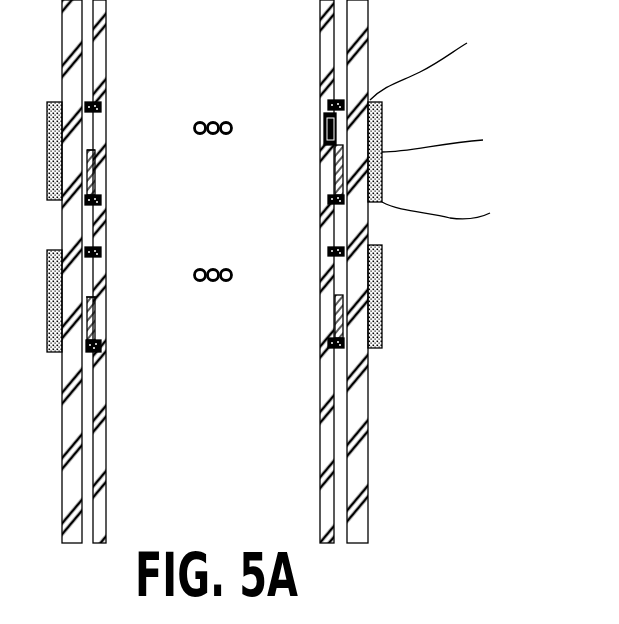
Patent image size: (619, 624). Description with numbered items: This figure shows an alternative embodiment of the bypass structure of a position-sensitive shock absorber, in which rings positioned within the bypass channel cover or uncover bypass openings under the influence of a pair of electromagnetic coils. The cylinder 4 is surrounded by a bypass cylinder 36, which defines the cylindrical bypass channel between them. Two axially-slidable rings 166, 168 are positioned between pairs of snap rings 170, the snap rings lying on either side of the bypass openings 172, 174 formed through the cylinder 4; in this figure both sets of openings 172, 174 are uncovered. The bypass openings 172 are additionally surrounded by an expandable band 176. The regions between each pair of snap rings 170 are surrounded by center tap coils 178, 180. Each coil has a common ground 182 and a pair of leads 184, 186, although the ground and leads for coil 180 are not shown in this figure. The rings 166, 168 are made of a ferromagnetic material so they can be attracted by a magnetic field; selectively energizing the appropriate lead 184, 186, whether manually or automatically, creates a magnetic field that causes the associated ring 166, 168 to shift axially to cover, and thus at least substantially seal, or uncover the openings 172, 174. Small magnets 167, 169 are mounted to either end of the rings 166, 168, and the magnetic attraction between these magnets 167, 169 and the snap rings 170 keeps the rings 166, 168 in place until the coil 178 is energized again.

The cylinder 4 is at (321, 437).
The bypass cylinder 36 is at (369, 437).
The axially-slidable ring 166 is at (91, 168).
The small magnet 167 is at (93, 152).
The axially-slidable ring 168 is at (95, 320).
The small magnet 169 is at (91, 297).
The snap ring 170 is at (91, 353).
The bypass opening 172 is at (211, 121).
The bypass opening 174 is at (213, 282).
The expandable band 176 is at (325, 132).
The center tap coil 178 is at (383, 127).
The center tap coil 180 is at (383, 316).
The common ground 182 is at (470, 141).
The lead 184 is at (465, 43).
The lead 186 is at (478, 218).